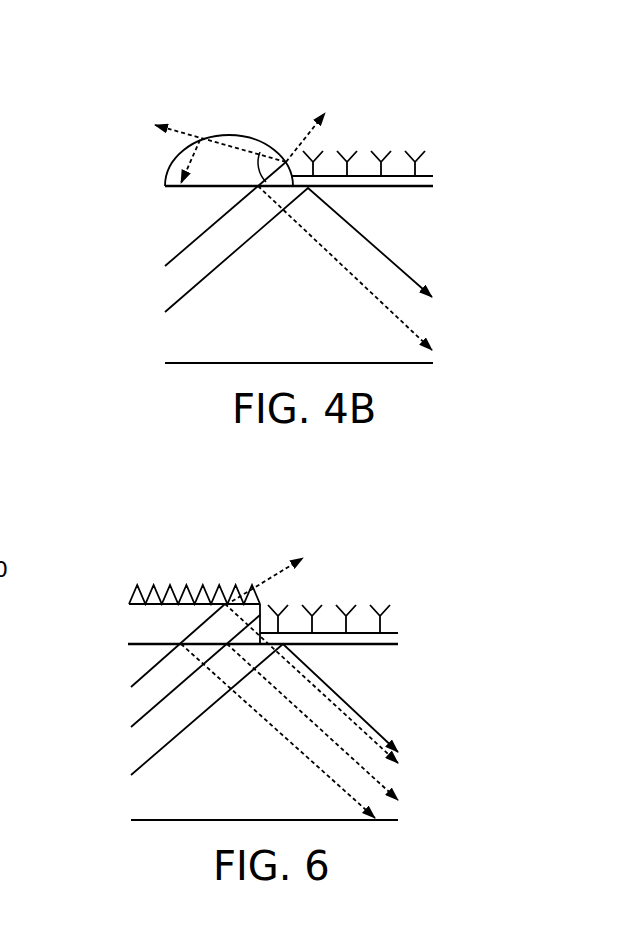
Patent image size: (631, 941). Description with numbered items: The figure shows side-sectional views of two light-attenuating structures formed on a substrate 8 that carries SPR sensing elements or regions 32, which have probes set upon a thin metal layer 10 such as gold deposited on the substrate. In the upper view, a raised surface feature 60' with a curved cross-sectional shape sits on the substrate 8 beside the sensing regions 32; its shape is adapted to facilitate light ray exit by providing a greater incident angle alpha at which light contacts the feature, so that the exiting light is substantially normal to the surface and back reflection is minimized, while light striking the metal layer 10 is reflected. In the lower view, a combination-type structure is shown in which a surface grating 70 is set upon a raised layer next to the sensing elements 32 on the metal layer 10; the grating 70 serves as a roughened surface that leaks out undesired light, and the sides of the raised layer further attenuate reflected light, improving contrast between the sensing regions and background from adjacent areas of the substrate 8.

In FIG. 4B, the substrate 8 is at (180, 222).
In FIG. 6, the substrate 8 is at (143, 739).
In FIG. 4B, the thin metal layer 10 is at (423, 178).
In FIG. 6, the thin metal layer 10 is at (390, 633).
In FIG. 4B, the SPR sensing elements 32 is at (369, 119).
In FIG. 6, the SPR sensing elements 32 is at (334, 579).
In FIG. 4B, the raised surface feature with curved cross-sectional shape 60' is at (240, 128).
In FIG. 6, the surface grating 70 is at (257, 576).